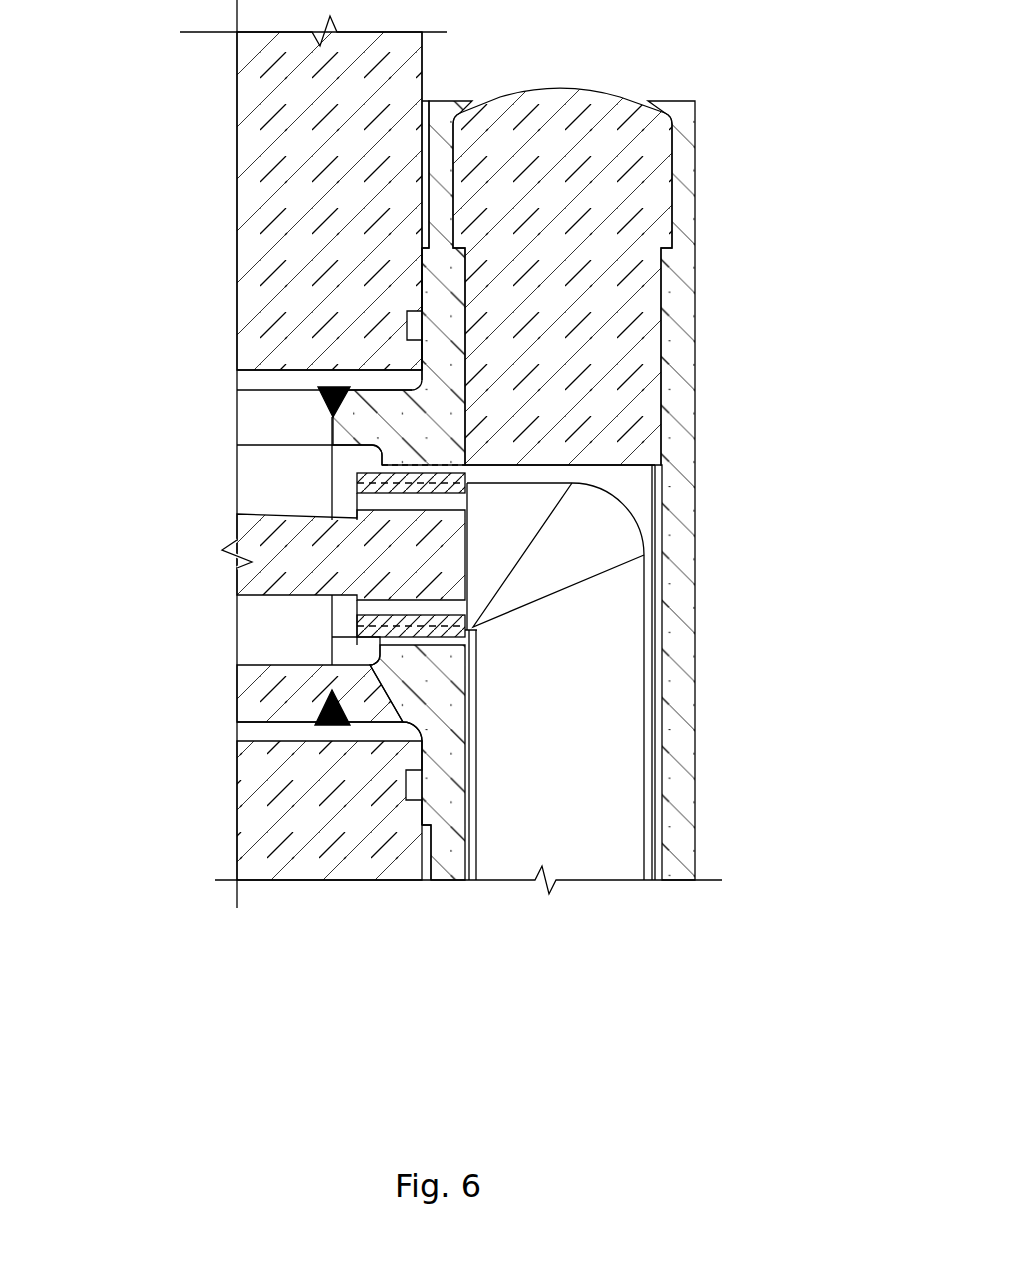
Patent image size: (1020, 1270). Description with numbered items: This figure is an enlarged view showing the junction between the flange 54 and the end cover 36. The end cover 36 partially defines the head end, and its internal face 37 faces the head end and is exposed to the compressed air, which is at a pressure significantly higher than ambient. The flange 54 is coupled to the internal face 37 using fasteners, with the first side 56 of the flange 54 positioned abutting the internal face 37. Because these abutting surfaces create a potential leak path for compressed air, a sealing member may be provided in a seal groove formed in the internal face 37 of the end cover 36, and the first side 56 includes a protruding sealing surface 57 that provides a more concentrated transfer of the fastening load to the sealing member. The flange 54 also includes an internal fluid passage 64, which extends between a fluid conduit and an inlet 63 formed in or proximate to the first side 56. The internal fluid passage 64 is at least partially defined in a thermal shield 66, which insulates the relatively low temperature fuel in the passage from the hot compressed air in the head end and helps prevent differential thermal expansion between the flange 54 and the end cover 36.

The end cover 36 is at (263, 202).
The internal face 37 is at (424, 68).
The flange 54 is at (686, 665).
The first side 56 is at (424, 176).
The protruding sealing surface 57 is at (424, 283).
The inlet 63 is at (475, 562).
The internal fluid passage 64 is at (549, 788).
The thermal shield 66 is at (559, 116).